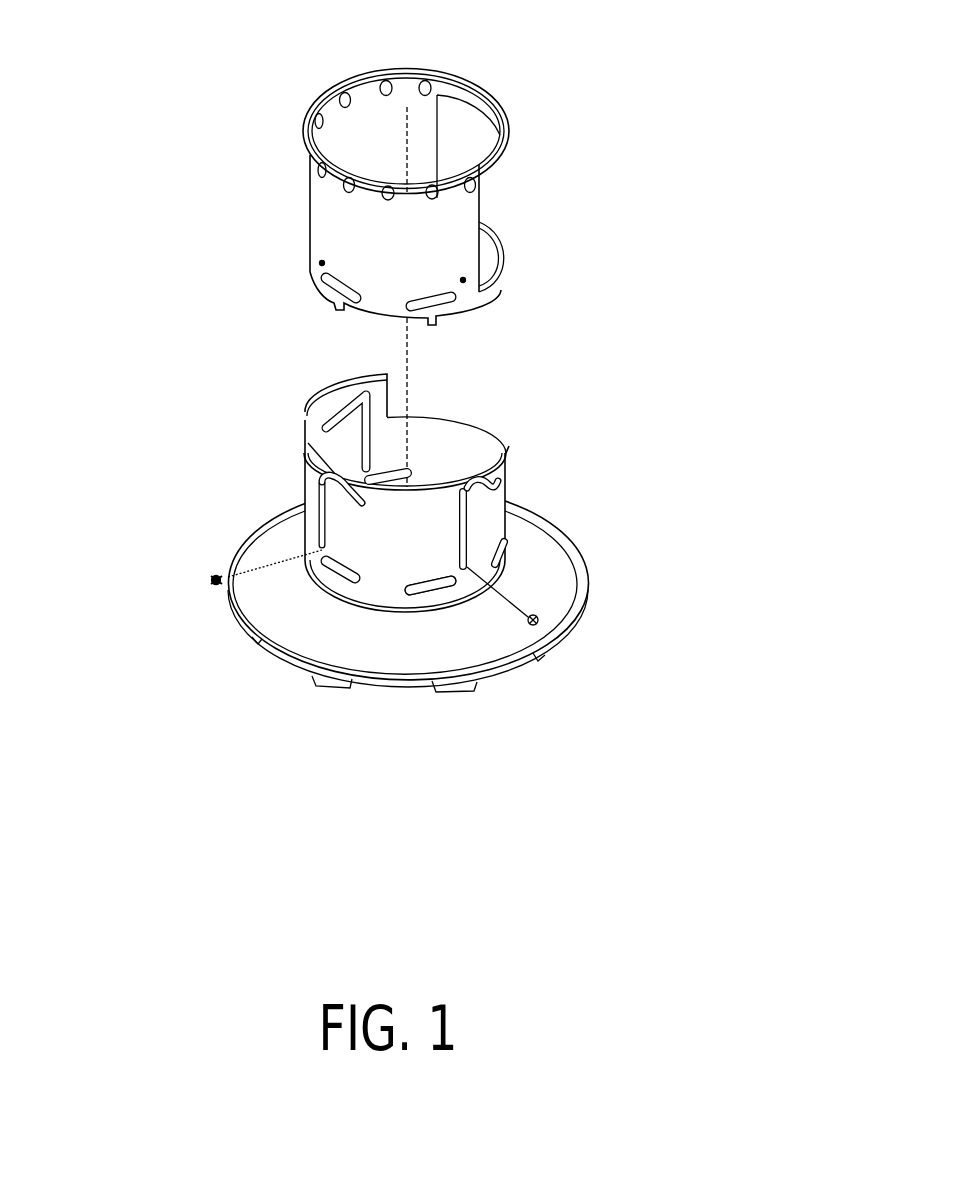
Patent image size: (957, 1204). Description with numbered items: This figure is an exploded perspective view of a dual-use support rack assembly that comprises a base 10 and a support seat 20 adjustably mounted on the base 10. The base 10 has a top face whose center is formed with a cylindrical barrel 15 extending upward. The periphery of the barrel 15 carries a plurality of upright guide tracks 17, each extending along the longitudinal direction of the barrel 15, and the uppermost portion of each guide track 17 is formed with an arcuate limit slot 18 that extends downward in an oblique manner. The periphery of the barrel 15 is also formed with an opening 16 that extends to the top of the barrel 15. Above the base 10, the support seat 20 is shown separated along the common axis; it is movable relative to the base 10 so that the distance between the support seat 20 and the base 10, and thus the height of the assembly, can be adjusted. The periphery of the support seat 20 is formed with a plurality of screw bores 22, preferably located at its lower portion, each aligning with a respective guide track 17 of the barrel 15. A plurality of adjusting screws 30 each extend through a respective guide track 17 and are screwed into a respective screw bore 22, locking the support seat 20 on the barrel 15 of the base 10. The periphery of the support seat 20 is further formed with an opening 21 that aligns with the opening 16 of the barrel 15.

The base 10 is at (558, 557).
The cylindrical barrel 15 is at (392, 590).
The opening 16 is at (465, 427).
The upright guide tracks 17 is at (320, 490).
The arcuate limit slot 18 is at (322, 437).
The support seat 20 is at (320, 193).
The opening 21 is at (457, 118).
The screw bores 22 is at (322, 263).
The adjusting screws 30 is at (210, 580).